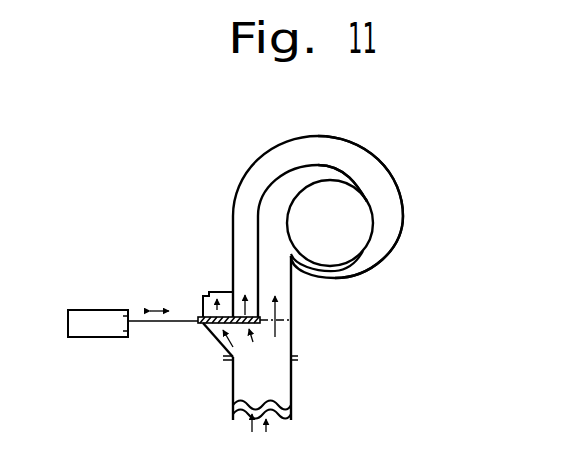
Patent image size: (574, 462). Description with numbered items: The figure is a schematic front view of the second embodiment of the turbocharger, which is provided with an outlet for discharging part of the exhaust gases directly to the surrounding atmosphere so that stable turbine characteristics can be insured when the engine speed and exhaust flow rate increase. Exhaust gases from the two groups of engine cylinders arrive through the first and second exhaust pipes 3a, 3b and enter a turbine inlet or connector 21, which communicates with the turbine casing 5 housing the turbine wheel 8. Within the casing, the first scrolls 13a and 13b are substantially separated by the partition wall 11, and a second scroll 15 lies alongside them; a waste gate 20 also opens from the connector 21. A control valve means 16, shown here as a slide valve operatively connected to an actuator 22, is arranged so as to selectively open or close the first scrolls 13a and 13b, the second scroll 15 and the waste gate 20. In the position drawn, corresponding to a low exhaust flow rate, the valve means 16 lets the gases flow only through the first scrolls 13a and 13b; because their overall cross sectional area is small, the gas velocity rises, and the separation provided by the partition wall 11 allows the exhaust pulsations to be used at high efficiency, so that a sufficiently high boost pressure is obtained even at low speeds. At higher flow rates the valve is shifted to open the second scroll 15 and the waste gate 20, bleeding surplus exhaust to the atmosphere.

The turbine casing 5 is at (392, 168).
The turbine wheel 8 is at (352, 237).
The partition wall 11 is at (295, 177).
The first scroll 13a is at (272, 227).
The first scroll 13b is at (257, 241).
The second scroll 15 is at (393, 207).
The control valve means 16 is at (210, 325).
The waste gate 20 is at (225, 291).
The turbine inlet or connector 21 is at (270, 345).
The actuator 22 is at (87, 337).
The first exhaust pipe 3a is at (277, 393).
The second exhaust pipe 3b is at (262, 417).